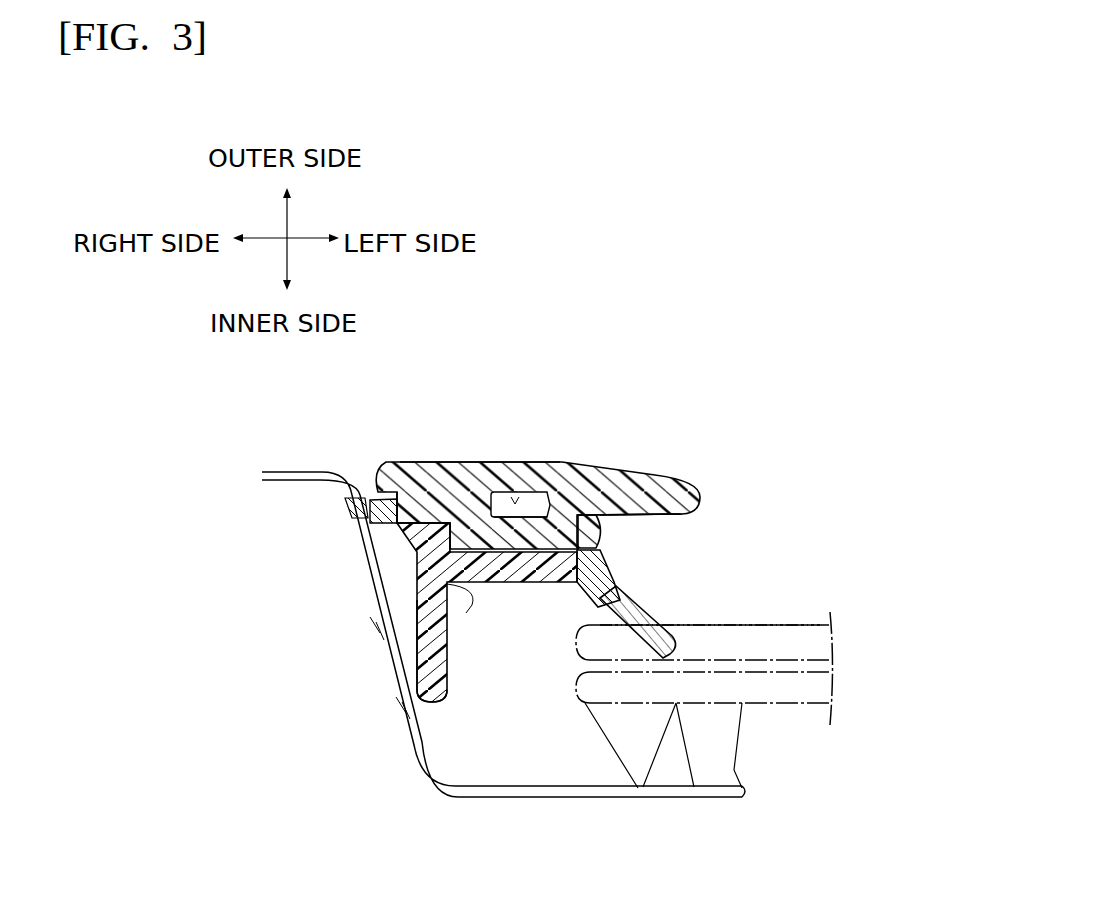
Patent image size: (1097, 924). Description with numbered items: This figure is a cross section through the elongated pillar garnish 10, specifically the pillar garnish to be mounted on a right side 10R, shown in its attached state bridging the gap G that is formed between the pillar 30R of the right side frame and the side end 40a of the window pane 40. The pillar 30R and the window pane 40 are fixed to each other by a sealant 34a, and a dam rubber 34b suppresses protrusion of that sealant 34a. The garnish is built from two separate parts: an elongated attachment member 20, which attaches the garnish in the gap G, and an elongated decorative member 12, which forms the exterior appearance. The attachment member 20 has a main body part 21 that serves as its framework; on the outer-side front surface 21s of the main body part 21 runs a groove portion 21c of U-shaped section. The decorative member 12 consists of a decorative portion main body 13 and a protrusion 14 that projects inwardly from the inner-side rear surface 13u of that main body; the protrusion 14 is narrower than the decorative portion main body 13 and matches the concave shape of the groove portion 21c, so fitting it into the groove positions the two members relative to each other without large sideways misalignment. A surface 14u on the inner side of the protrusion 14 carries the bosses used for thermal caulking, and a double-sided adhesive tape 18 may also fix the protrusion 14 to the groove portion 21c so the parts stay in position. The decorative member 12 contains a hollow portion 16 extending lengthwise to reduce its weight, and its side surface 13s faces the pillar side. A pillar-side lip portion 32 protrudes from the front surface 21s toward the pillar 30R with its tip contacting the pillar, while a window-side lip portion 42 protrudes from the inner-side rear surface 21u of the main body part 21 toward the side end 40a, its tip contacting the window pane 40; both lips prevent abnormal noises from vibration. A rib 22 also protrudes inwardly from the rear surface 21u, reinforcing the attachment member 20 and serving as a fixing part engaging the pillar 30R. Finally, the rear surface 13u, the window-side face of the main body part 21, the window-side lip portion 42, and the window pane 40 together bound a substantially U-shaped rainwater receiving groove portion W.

The pillar garnish 10 is at (555, 511).
The pillar garnish to be mounted on a right side 10R is at (555, 511).
The decorative member 12 is at (570, 460).
The decorative portion main body 13 is at (410, 465).
The side surface of inner portion 13s is at (447, 460).
The rear surface 13u is at (645, 513).
The protrusion 14 is at (577, 462).
The surface of an inner side of the protrusion 14u is at (473, 488).
The hollow portion 16 is at (517, 490).
The double-sided adhesive tape 18 is at (547, 455).
The attachment member 20 is at (491, 570).
The main body part 21 is at (412, 580).
The front surface 21s is at (380, 470).
The rear surface 21u is at (417, 632).
The groove portion 21c is at (600, 528).
The rib 22 is at (420, 684).
The pillar 30R is at (410, 786).
The pillar-side lip portion 32 is at (333, 504).
The sealant 34a is at (637, 800).
The dam rubber 34b is at (740, 782).
The window pane 40 is at (708, 637).
The side end 40a is at (684, 624).
The window-side lip portion 42 is at (640, 604).
The rainwater receiving groove portion W is at (698, 562).
The gap G is at (504, 692).